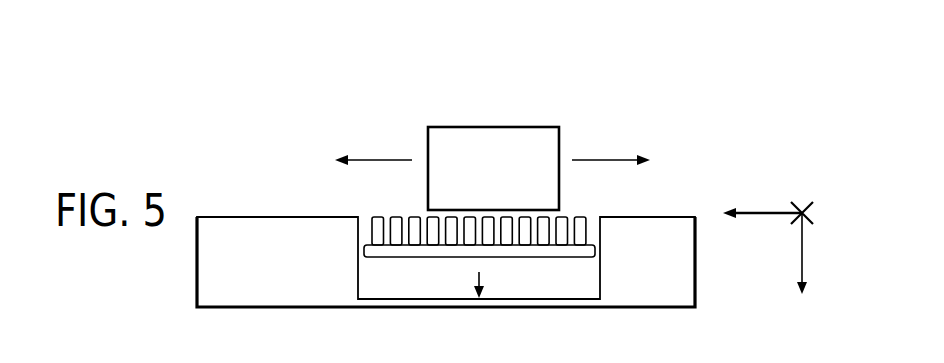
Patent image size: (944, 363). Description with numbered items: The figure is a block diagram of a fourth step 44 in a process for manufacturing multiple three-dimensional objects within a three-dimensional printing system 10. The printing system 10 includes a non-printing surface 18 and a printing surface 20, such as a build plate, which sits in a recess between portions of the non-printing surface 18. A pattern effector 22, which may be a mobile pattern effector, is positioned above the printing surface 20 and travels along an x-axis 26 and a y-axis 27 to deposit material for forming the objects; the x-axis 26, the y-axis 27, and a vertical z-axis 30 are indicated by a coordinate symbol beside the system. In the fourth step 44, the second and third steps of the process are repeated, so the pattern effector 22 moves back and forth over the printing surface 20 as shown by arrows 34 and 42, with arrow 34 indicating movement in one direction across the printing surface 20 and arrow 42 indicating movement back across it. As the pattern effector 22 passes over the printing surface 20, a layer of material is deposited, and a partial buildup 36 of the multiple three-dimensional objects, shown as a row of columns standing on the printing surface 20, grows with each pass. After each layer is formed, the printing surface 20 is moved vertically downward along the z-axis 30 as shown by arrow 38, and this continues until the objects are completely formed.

The 3D printing system 10 is at (192, 108).
The non-printing surface 18 is at (658, 217).
The printing surface 20 is at (528, 257).
The pattern effector 22 is at (491, 126).
The x-axis 26 is at (766, 211).
The y-axis 27 is at (813, 209).
The z-axis 30 is at (803, 252).
The arrow 34 is at (604, 158).
The partial buildup 36 is at (413, 217).
The arrow 38 is at (479, 272).
The arrow 42 is at (383, 158).
The fourth step 44 is at (681, 107).